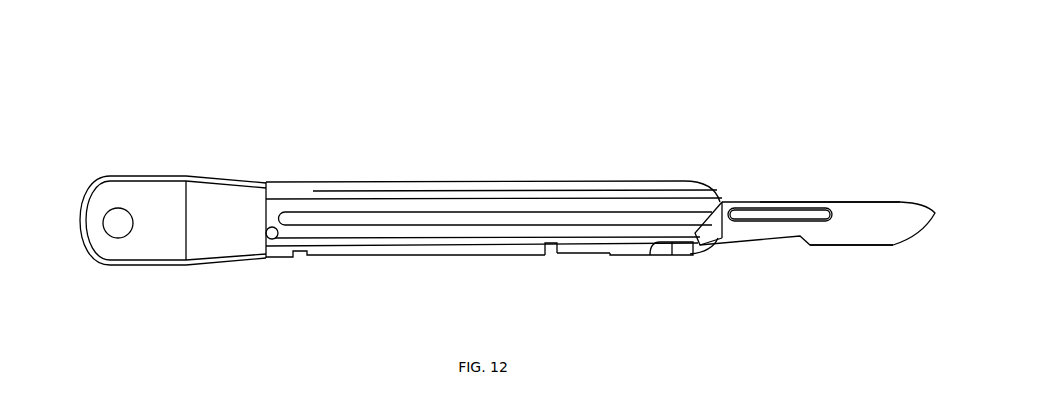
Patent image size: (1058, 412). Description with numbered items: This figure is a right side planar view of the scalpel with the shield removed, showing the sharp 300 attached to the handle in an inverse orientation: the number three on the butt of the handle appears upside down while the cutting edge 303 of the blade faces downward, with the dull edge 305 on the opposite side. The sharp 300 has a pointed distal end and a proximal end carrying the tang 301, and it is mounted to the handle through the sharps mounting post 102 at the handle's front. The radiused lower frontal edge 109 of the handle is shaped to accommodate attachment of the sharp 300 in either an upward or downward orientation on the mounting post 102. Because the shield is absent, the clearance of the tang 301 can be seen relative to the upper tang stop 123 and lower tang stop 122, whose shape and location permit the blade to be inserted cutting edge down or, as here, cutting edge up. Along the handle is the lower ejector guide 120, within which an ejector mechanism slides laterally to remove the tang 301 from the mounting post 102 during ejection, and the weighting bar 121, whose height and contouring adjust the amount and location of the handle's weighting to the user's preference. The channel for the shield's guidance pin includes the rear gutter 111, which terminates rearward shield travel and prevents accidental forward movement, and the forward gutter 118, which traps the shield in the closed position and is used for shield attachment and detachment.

The mounting post 102 is at (782, 209).
The lower frontal edge 109 is at (708, 182).
The rear gutter 111 is at (302, 257).
The forward gutter 118 is at (557, 253).
The lower ejector guide 120 is at (283, 198).
The weighting bar 121 is at (315, 218).
The lower tang stop 122 is at (683, 180).
The upper tang stop 123 is at (688, 250).
The sharp 300 is at (865, 204).
The tang 301 is at (720, 238).
The cutting edge 303 is at (868, 246).
The dull edge 305 is at (846, 200).